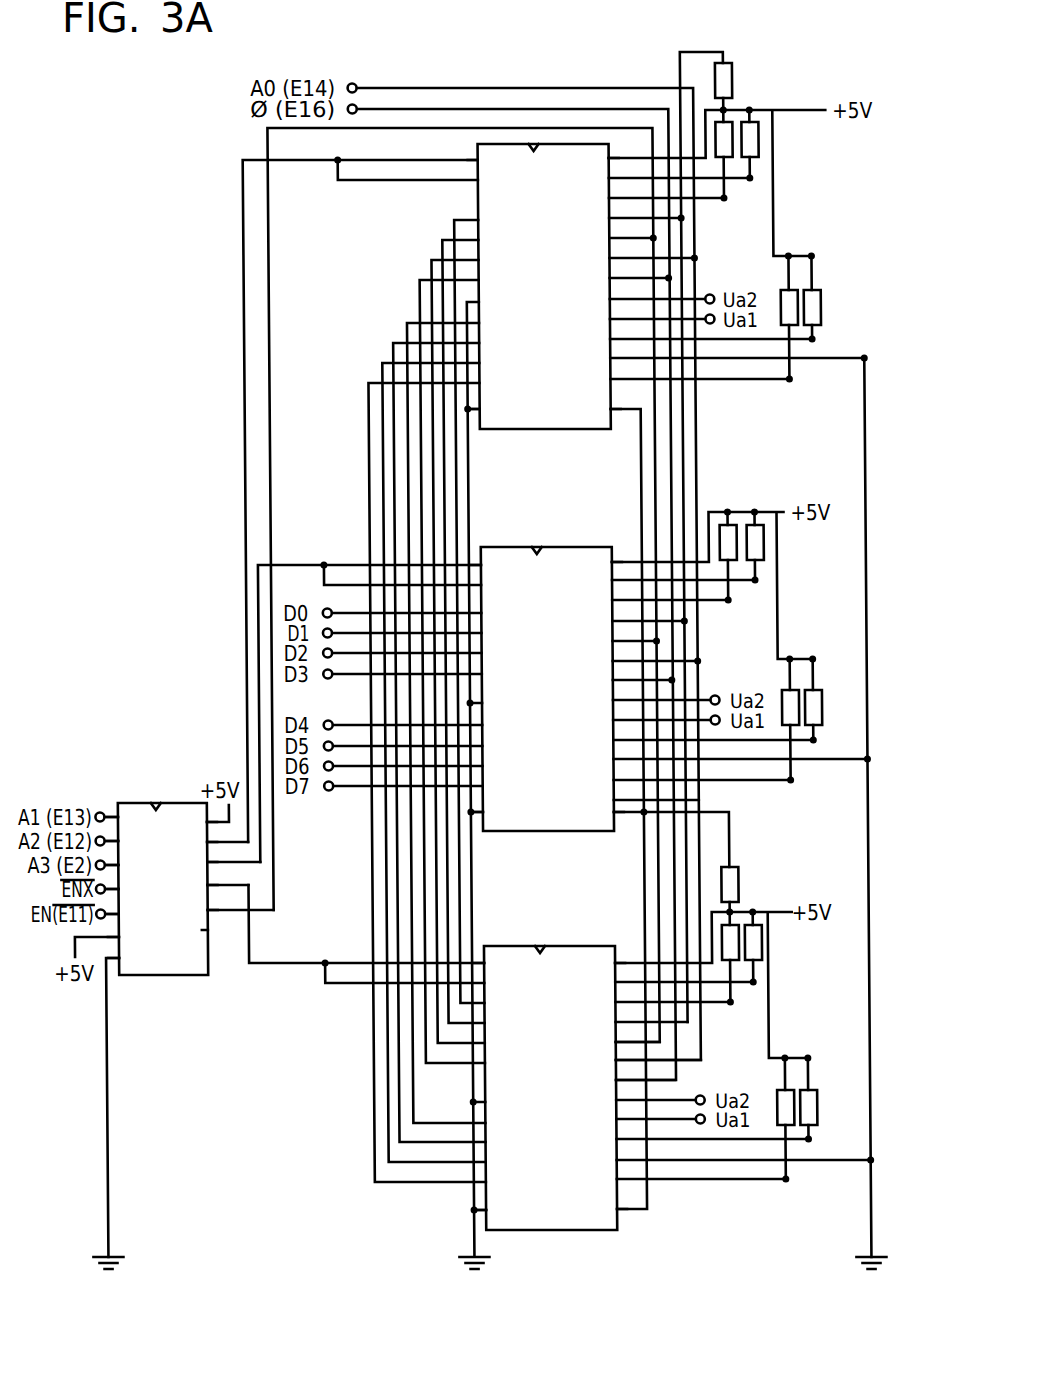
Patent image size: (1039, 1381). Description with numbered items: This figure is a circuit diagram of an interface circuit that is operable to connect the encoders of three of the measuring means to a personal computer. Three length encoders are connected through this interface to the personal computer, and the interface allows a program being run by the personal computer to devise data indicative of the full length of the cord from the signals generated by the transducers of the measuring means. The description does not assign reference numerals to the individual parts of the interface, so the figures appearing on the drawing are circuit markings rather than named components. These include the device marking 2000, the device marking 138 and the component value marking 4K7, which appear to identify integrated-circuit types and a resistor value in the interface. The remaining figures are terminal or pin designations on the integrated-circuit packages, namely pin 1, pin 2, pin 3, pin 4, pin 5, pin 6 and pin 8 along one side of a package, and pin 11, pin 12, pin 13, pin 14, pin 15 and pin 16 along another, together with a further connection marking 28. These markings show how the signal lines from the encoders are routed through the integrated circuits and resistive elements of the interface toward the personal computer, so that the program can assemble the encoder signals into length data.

The memory/display driver chip 2000 is at (548, 687).
The decoder 138 is at (163, 889).
The 4.7 kOhm resistor 4K7 is at (795, 594).
The pin 1 is at (303, 563).
The pin 2 is at (123, 849).
The pin 3 is at (123, 871).
The pin 4 is at (123, 893).
The pin 5 is at (124, 915).
The pin 6 is at (124, 935).
The pin 8 is at (124, 959).
The pin 11 is at (195, 934).
The pin 12 is at (200, 913).
The pin 13 is at (199, 889).
The pin 14 is at (349, 814).
The pin 15 is at (403, 814).
The pin 16 is at (199, 824).
The pin 28 is at (600, 563).